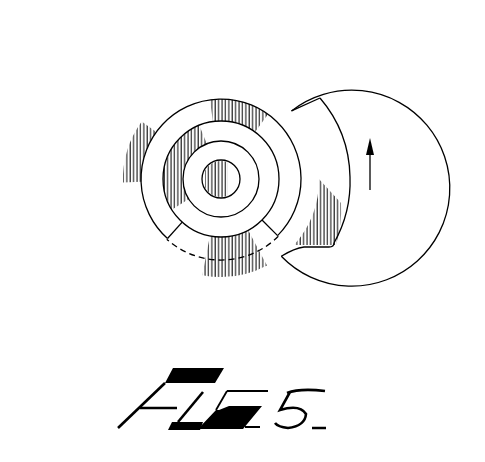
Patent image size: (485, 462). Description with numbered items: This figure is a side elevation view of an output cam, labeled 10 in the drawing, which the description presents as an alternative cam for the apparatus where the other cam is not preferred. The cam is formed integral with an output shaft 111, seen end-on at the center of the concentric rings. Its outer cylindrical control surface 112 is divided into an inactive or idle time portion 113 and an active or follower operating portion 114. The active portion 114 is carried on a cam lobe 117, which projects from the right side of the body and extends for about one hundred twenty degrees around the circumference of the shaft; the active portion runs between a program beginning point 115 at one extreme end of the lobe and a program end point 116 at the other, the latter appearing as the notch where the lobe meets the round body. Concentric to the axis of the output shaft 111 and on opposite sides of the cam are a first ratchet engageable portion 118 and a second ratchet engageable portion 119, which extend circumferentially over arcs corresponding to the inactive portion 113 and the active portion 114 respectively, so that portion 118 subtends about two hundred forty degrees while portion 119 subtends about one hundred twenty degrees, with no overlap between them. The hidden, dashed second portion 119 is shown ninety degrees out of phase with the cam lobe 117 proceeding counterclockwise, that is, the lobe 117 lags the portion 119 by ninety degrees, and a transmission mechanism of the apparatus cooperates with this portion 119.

The cutter assembly 10 is at (103, 143).
The output shaft 111 is at (227, 173).
The cylindrical control surface 112 is at (217, 90).
The inactive or idle time portion 113 is at (123, 197).
The active or follower operating portion 114 is at (343, 220).
The program beginning point 115 is at (293, 254).
The program end point 116 is at (293, 110).
The cam lobe 117 is at (322, 126).
The first ratchet engageable portion 118 is at (172, 108).
The second ratchet engageable portion 119 is at (200, 267).